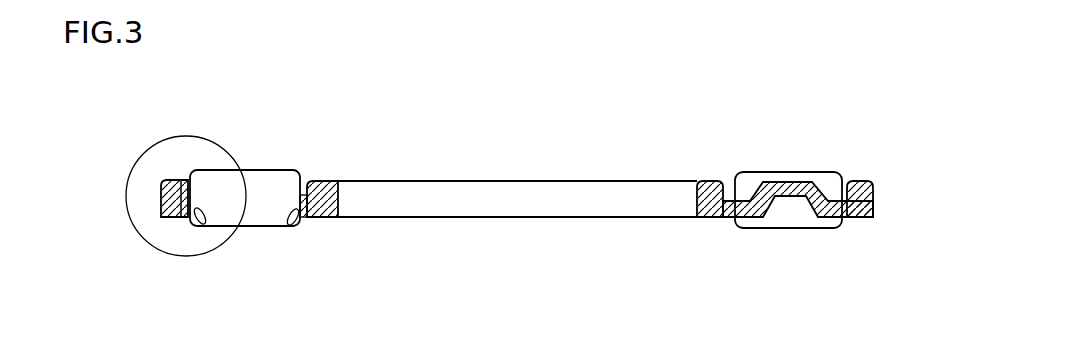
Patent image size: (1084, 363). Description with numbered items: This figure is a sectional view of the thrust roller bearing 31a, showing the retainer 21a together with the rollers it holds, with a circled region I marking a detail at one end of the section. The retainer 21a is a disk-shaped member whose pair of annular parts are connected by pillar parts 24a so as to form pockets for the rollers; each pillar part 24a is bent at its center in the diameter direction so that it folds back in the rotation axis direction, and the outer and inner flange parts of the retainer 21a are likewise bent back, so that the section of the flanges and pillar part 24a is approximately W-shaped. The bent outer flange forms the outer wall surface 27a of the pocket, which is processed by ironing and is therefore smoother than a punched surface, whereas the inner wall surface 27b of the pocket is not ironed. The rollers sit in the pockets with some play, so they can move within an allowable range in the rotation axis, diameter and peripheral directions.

The thrust roller bearing 31a is at (886, 51).
The retainer 21a is at (423, 203).
The outer wall surface 27a is at (204, 224).
The inner wall surface 27b is at (290, 225).
The pillar part 24a is at (755, 214).
The detail region I is at (126, 196).